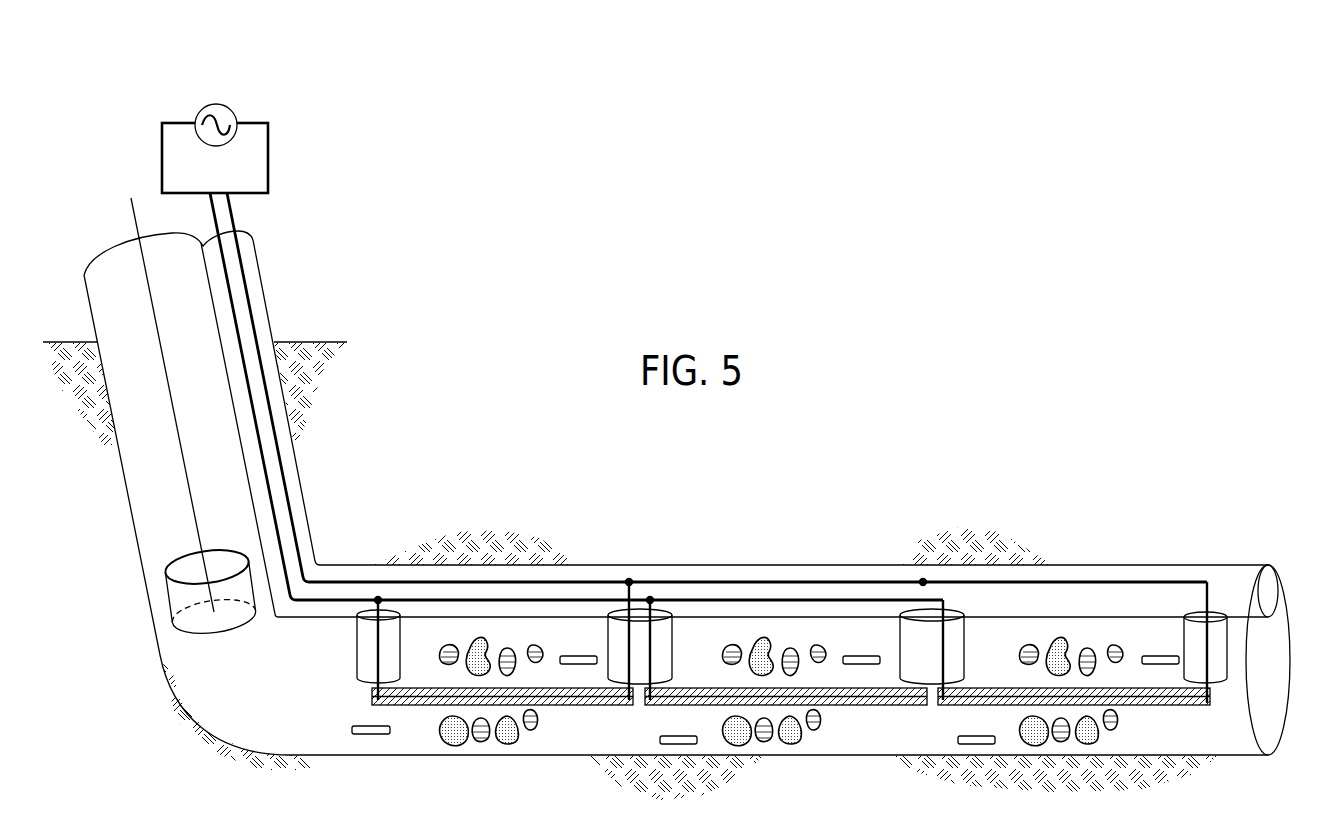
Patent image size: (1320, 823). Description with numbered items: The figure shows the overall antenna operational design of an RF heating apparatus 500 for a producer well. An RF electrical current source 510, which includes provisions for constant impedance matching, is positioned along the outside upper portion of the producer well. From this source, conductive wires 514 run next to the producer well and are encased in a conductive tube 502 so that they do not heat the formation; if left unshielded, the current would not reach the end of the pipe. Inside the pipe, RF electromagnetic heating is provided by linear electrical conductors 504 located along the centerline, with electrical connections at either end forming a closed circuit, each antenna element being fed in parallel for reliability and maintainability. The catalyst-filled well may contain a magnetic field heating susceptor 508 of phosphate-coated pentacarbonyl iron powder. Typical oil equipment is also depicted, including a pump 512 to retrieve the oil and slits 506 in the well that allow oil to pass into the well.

The RF heating apparatus 500 is at (1010, 360).
The conductive tube 502 is at (750, 565).
The linear electrical conductors 504 is at (423, 707).
The slits 506 is at (861, 652).
The magnetic field heating susceptor 508 is at (1058, 638).
The RF electrical current source 510 is at (214, 103).
The pump 512 is at (168, 602).
The conductive wires 514 is at (287, 472).